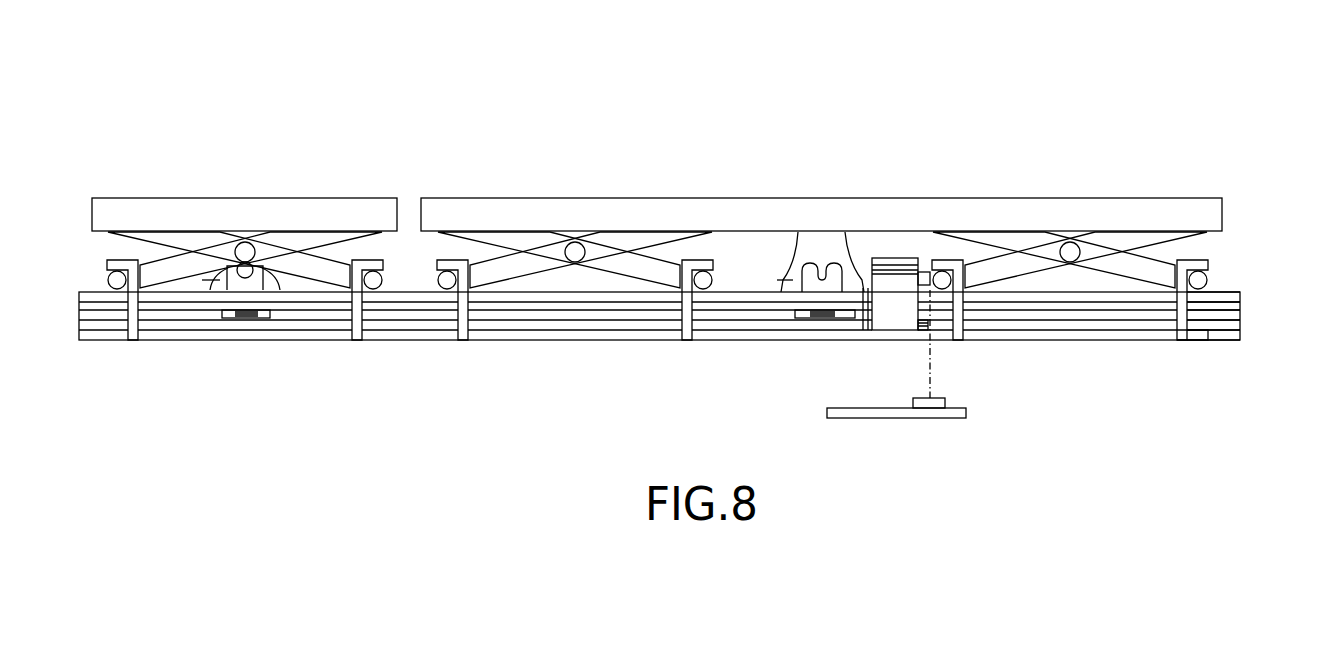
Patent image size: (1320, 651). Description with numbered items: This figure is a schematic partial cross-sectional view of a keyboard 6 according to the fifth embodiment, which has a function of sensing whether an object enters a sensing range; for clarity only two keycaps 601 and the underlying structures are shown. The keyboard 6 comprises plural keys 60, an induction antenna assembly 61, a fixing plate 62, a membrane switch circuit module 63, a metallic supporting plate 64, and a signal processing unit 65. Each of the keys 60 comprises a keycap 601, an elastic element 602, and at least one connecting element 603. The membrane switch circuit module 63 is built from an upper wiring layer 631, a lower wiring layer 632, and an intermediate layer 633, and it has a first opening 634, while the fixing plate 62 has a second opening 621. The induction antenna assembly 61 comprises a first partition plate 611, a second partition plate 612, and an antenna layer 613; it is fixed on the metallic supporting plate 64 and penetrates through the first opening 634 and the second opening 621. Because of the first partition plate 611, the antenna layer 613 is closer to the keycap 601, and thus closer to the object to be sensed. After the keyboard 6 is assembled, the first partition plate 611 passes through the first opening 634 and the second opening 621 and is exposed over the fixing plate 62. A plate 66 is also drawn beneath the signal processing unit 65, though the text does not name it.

The keyboard 6 is at (1078, 97).
The keys 60 is at (168, 38).
The keycap 601 is at (298, 208).
The elastic element 602 is at (202, 280).
The connecting element 603 is at (193, 240).
The induction antenna assembly 61 is at (287, 38).
The first partition plate 611 is at (880, 303).
The second partition plate 612 is at (892, 265).
The antenna layer 613 is at (865, 268).
The fixing plate 62 is at (1210, 293).
The second opening 621 is at (940, 278).
The membrane switch circuit module 63 is at (403, 38).
The upper wiring layer 631 is at (1225, 305).
The lower wiring layer 632 is at (1225, 325).
The intermediate layer 633 is at (1225, 313).
The first opening 634 is at (918, 322).
The metallic supporting plate 64 is at (1187, 333).
The signal processing unit 65 is at (935, 402).
The bottom board 66 is at (932, 413).